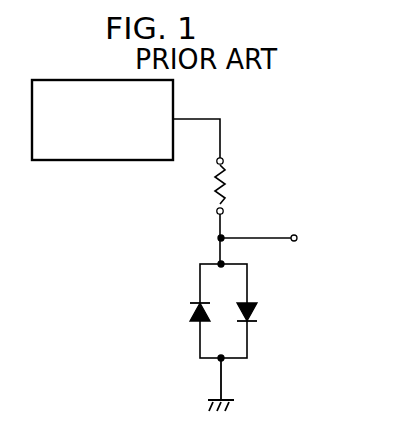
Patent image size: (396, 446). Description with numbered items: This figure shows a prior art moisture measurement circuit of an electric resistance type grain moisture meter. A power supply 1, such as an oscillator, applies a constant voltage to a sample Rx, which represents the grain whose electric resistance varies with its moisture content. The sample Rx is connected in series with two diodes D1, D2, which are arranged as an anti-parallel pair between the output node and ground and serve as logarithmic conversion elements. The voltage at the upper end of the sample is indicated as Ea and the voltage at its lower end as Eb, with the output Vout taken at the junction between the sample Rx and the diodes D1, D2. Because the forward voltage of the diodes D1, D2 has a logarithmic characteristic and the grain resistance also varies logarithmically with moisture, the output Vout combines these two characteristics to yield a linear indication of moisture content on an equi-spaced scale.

The power supply 1 is at (92, 160).
The sample Rx is at (224, 190).
The node voltage Ea is at (216, 163).
The node voltage Eb is at (216, 212).
The output Vout is at (324, 239).
The diode D1 is at (191, 309).
The diode D2 is at (256, 307).